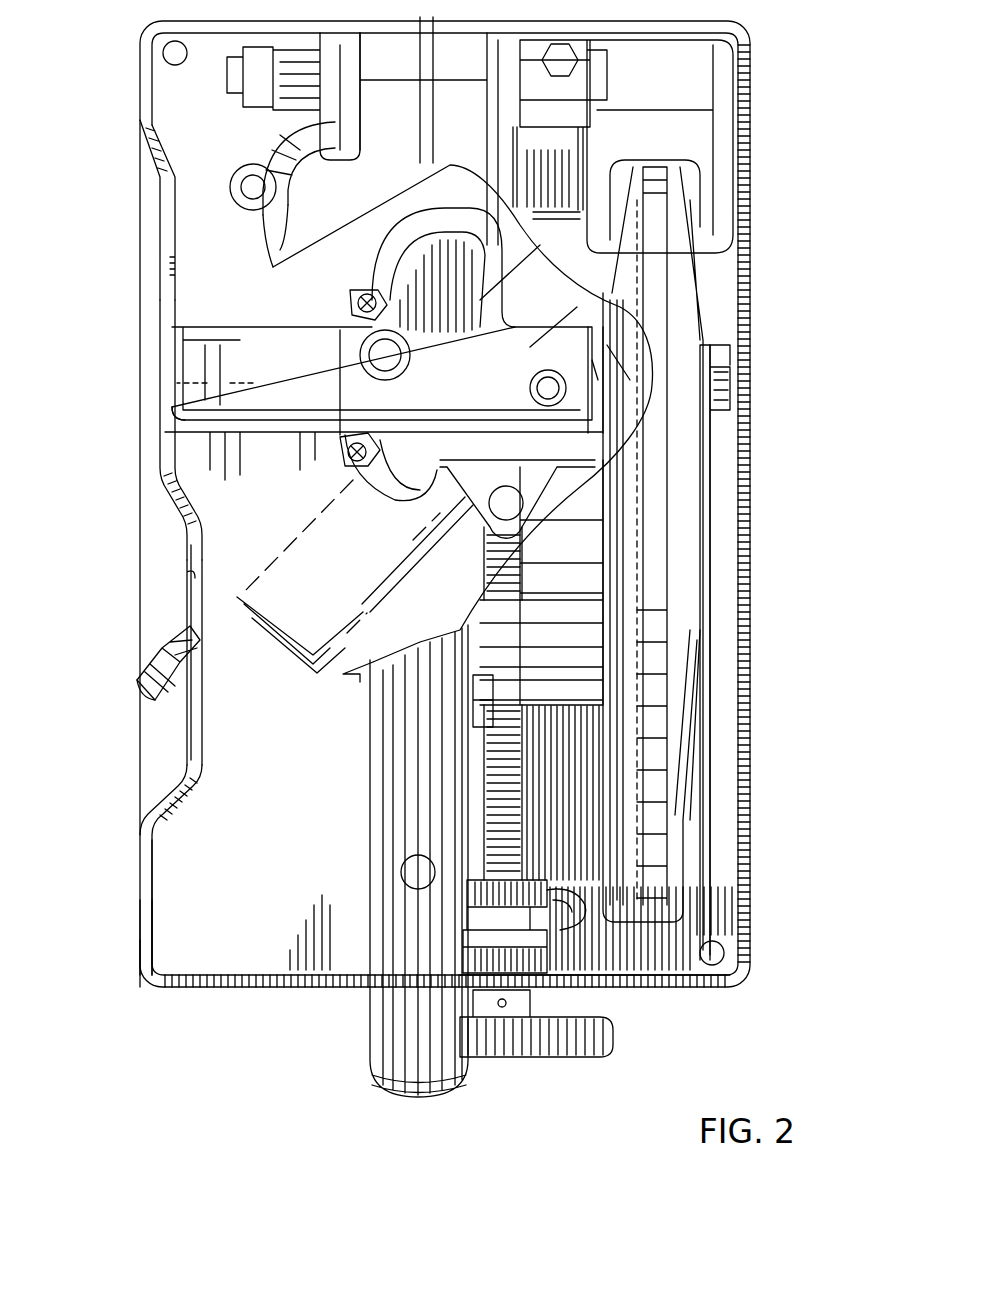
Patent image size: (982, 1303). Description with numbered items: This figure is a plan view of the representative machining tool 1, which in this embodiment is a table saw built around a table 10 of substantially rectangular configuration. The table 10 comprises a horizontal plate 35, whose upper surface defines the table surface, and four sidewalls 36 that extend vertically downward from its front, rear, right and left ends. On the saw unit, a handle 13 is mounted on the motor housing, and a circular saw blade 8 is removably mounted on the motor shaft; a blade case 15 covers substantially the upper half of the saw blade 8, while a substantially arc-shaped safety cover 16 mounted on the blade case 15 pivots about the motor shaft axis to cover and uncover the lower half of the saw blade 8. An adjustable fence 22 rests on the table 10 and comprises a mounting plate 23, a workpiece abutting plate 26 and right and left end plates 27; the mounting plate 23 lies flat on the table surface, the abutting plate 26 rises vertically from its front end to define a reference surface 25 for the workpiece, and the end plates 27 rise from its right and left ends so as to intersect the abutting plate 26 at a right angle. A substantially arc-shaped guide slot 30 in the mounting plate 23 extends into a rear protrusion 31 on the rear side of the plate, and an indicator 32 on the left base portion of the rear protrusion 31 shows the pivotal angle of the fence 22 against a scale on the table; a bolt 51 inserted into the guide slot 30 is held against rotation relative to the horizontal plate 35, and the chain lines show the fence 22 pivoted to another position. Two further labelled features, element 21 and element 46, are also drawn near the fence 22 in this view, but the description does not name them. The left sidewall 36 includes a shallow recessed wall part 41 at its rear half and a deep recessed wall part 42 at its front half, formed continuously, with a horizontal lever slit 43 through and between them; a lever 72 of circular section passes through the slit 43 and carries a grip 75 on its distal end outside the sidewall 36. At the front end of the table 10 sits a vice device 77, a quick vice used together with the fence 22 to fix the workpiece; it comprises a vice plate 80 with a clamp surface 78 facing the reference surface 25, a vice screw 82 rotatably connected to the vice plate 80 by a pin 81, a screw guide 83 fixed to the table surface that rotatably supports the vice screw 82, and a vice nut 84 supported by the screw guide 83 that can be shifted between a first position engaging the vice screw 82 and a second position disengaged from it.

The machining tool 1 is at (783, 152).
The circular saw blade 8 is at (660, 667).
The table 10 is at (235, 995).
The handle 13 is at (397, 1062).
The blade case 15 is at (680, 612).
The safety cover 16 is at (700, 823).
The mounting bracket 21 is at (213, 453).
The fence 22 is at (197, 392).
The mounting plate 23 is at (165, 340).
The reference surface 25 is at (273, 440).
The workpiece abutting plate 26 is at (257, 425).
The end plates 27 is at (600, 395).
The guide slot 30 is at (437, 255).
The rear protrusion 31 is at (386, 267).
The indicator 32 is at (352, 300).
The horizontal plate 35 is at (170, 944).
The sidewalls 36 is at (140, 868).
The shallow recessed wall part 41 is at (158, 270).
The deep recessed wall part 42 is at (190, 733).
The lever slit 43 is at (190, 578).
The pivot hole 46 is at (530, 388).
The bolt 51 is at (392, 352).
The lever 72 is at (178, 632).
The grip 75 is at (135, 692).
The vice device 77 is at (610, 1000).
The clamp surface 78 is at (583, 447).
The vice plate 80 is at (540, 483).
The pin 81 is at (522, 505).
The vice screw 82 is at (640, 747).
The screw guide 83 is at (530, 960).
The vice nut 84 is at (680, 945).